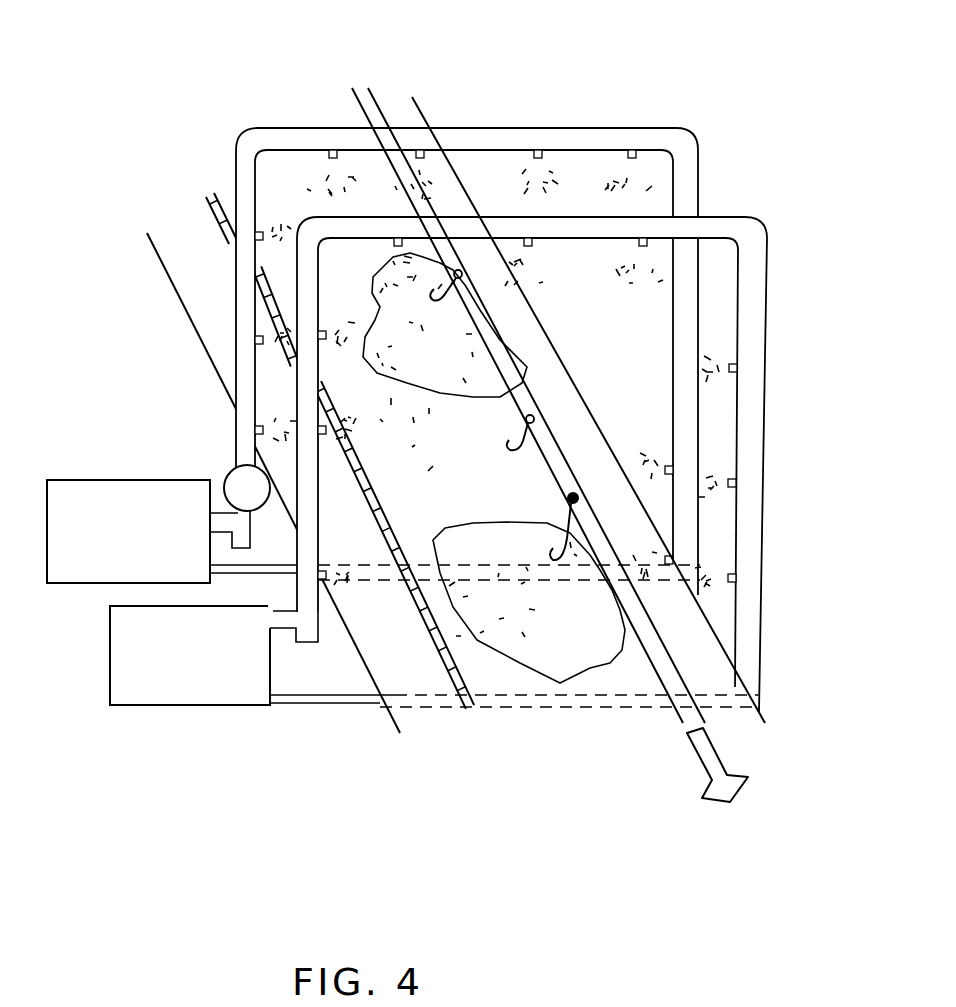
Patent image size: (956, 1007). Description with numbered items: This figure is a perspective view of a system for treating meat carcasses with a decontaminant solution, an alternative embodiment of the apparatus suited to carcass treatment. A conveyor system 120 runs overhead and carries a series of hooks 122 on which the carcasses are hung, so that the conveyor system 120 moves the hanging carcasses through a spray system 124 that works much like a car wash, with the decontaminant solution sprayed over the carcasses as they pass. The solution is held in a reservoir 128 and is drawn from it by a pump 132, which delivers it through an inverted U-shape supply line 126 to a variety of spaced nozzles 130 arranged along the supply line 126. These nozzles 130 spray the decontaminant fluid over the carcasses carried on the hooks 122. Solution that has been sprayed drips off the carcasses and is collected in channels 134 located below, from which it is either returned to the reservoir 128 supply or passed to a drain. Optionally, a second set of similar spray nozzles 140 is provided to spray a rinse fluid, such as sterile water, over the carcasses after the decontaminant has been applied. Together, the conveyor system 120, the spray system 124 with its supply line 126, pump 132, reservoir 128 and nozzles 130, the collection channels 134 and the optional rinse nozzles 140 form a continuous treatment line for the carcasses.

The conveyor system 120 is at (363, 86).
The hooks 122 is at (515, 440).
The spray system 124 is at (235, 158).
The supply line 126 is at (236, 418).
The reservoir 128 is at (128, 531).
The nozzles 130 is at (535, 152).
The pump 132 is at (226, 478).
The channels 134 is at (427, 632).
The spray nozzles 140 is at (797, 365).